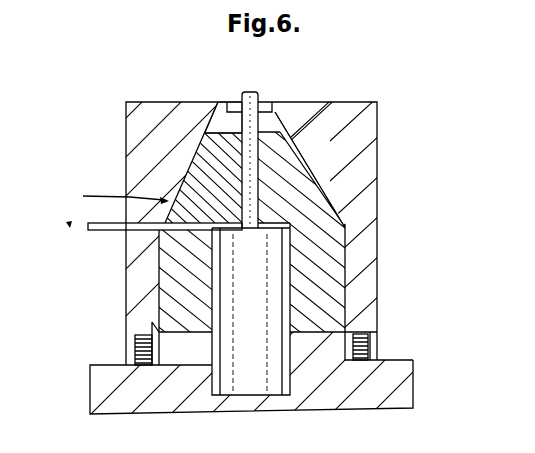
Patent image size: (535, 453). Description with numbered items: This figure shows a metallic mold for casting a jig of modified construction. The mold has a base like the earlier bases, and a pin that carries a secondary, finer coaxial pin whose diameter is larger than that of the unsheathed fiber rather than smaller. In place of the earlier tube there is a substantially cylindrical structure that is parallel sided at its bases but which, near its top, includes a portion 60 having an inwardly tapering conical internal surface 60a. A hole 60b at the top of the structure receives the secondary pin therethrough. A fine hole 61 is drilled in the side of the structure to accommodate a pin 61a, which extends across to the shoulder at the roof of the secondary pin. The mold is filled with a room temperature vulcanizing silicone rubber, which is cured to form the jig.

The portion 60 is at (355, 152).
The inwardly tapering conical internal surface 60a is at (327, 131).
The hole 60b is at (240, 102).
The fine hole 61 is at (160, 233).
The pin 61a is at (108, 230).